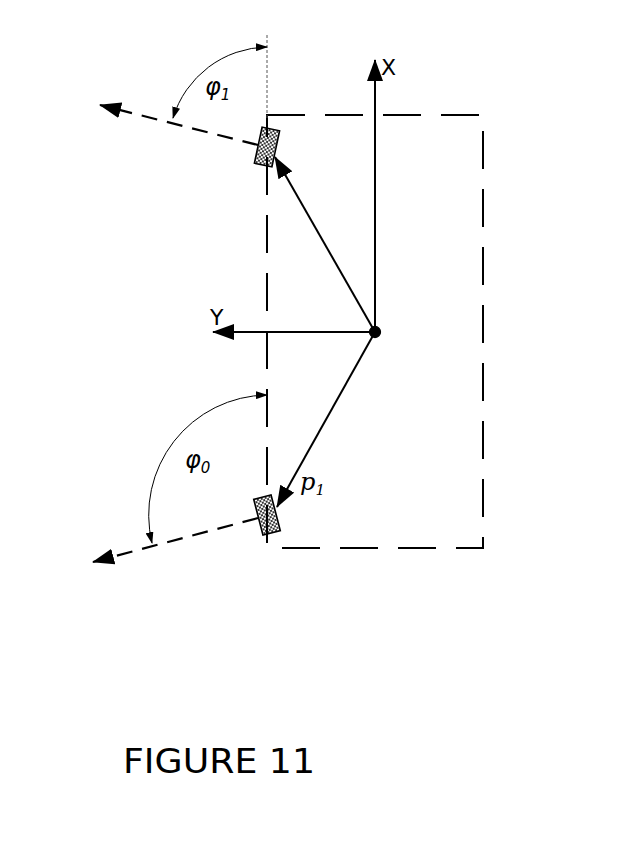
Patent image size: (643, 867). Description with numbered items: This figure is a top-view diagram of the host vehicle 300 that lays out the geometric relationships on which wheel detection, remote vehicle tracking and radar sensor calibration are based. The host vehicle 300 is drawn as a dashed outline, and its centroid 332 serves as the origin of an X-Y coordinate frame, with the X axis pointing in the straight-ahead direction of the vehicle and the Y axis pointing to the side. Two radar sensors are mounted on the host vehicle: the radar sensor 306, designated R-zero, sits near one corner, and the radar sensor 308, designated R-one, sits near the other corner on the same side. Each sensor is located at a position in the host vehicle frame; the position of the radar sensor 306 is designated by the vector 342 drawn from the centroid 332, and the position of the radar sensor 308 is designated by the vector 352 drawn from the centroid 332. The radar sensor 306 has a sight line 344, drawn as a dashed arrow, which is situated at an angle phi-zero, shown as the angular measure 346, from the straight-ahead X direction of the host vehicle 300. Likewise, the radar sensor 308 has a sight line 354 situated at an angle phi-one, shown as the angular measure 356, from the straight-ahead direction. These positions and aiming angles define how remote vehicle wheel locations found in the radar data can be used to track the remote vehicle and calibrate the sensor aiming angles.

The host vehicle 300 is at (483, 497).
The radar sensor 306 is at (272, 534).
The radar sensor 308 is at (268, 126).
The centroid 332 is at (381, 332).
The vector 342 is at (322, 427).
The sight line 344 is at (190, 535).
The angular measure 346 is at (203, 469).
The vector 352 is at (321, 237).
The sight line 354 is at (202, 130).
The angular measure 356 is at (208, 79).